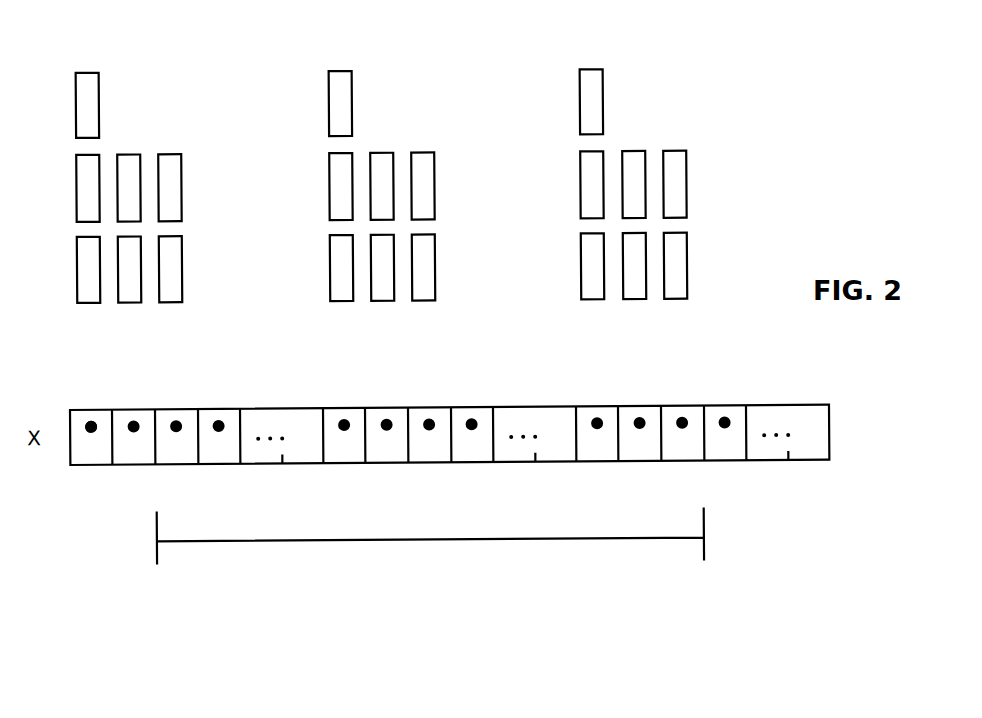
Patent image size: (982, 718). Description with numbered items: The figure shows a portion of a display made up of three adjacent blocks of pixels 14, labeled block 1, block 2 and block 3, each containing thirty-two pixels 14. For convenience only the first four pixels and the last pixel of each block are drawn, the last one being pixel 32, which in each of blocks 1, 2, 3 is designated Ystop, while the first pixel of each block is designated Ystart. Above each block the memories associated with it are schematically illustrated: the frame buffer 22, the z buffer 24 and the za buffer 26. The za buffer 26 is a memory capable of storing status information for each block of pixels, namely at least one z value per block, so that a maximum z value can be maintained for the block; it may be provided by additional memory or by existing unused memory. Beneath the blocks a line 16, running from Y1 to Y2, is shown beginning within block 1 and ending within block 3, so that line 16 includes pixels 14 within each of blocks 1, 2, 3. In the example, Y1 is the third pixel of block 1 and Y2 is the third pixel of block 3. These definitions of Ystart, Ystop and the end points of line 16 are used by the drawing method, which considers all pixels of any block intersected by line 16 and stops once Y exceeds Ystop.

The za buffer 26 is at (78, 92).
The z buffer 24 is at (78, 165).
The frame buffer 22 is at (78, 252).
The pixels 14 is at (91, 420).
The block 1 is at (218, 410).
The block 2 is at (512, 410).
The block 3 is at (746, 410).
The pixel 32 is at (552, 439).
The line 16 is at (293, 542).